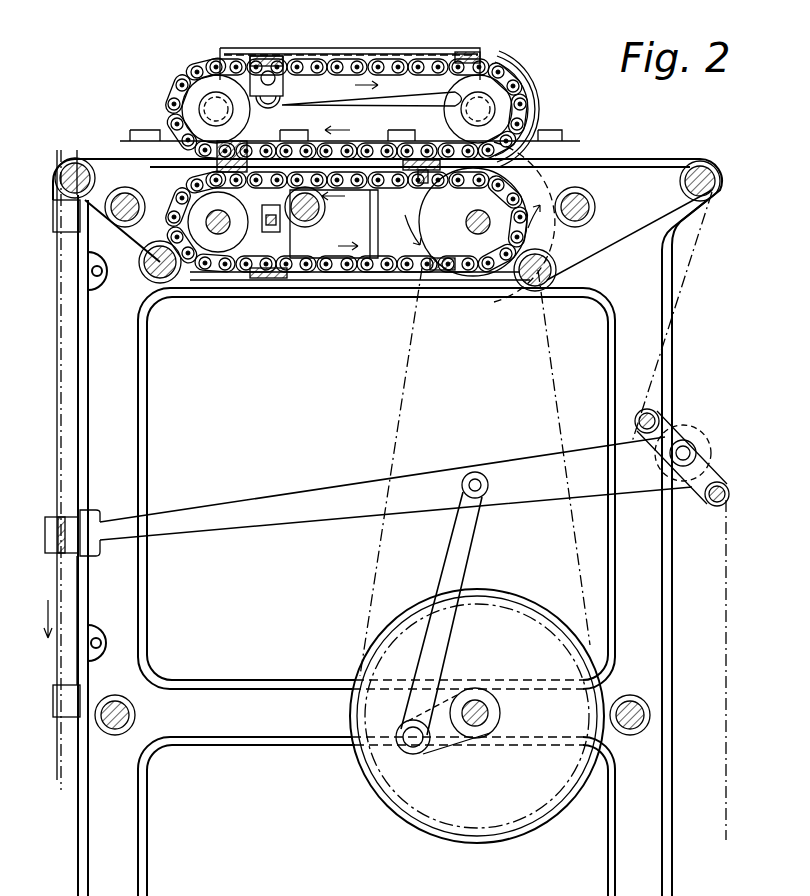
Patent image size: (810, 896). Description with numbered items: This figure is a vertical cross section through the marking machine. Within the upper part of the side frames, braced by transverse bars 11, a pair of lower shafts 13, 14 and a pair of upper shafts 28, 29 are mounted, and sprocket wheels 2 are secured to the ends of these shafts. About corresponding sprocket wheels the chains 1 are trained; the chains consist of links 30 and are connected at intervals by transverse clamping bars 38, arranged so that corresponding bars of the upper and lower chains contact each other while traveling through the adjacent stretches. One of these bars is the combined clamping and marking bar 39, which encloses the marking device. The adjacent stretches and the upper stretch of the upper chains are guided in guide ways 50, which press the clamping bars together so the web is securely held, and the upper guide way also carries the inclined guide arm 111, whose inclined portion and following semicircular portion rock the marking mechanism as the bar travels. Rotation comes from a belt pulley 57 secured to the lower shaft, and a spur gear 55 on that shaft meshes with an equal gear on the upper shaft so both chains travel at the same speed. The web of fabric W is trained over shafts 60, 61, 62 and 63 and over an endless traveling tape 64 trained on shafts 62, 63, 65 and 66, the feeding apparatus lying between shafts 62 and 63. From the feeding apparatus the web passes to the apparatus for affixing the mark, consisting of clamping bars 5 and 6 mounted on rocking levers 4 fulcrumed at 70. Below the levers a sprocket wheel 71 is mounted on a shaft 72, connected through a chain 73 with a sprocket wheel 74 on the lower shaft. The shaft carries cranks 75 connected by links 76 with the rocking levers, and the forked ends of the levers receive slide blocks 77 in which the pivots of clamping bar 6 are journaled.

The chains 1 is at (382, 267).
The sprocket wheels 2 is at (410, 262).
The rocking levers 4 is at (288, 497).
The clamping bar 5 is at (55, 545).
The clamping bar 6 is at (60, 556).
The transverse bars 11 is at (145, 712).
The lower shaft 13 is at (224, 228).
The lower shaft 14 is at (482, 232).
The upper shaft 28 is at (214, 104).
The upper shaft 29 is at (480, 108).
The links 30 is at (303, 280).
The transverse clamping bars 38 is at (462, 58).
The combined clamping and marking bar 39 is at (268, 66).
The guide ways 50 is at (350, 152).
The spur gear 55 is at (465, 92).
The belt pulley 57 is at (460, 276).
The shaft 60 is at (729, 493).
The shaft 61 is at (658, 420).
The shaft 62 is at (720, 185).
The shaft 63 is at (78, 160).
The endless traveling tape 64 is at (606, 244).
The shaft 65 is at (168, 282).
The shaft 66 is at (540, 290).
The fulcrum 70 is at (697, 452).
The sprocket wheel 71 is at (373, 782).
The shaft 72 is at (483, 727).
The chain 73 is at (418, 358).
The sprocket wheel 74 is at (434, 270).
The cranks 75 is at (452, 730).
The links 76 is at (450, 623).
The slide blocks 77 is at (100, 545).
The inclined guide arm 111 is at (372, 97).
The web of fabric W is at (727, 590).